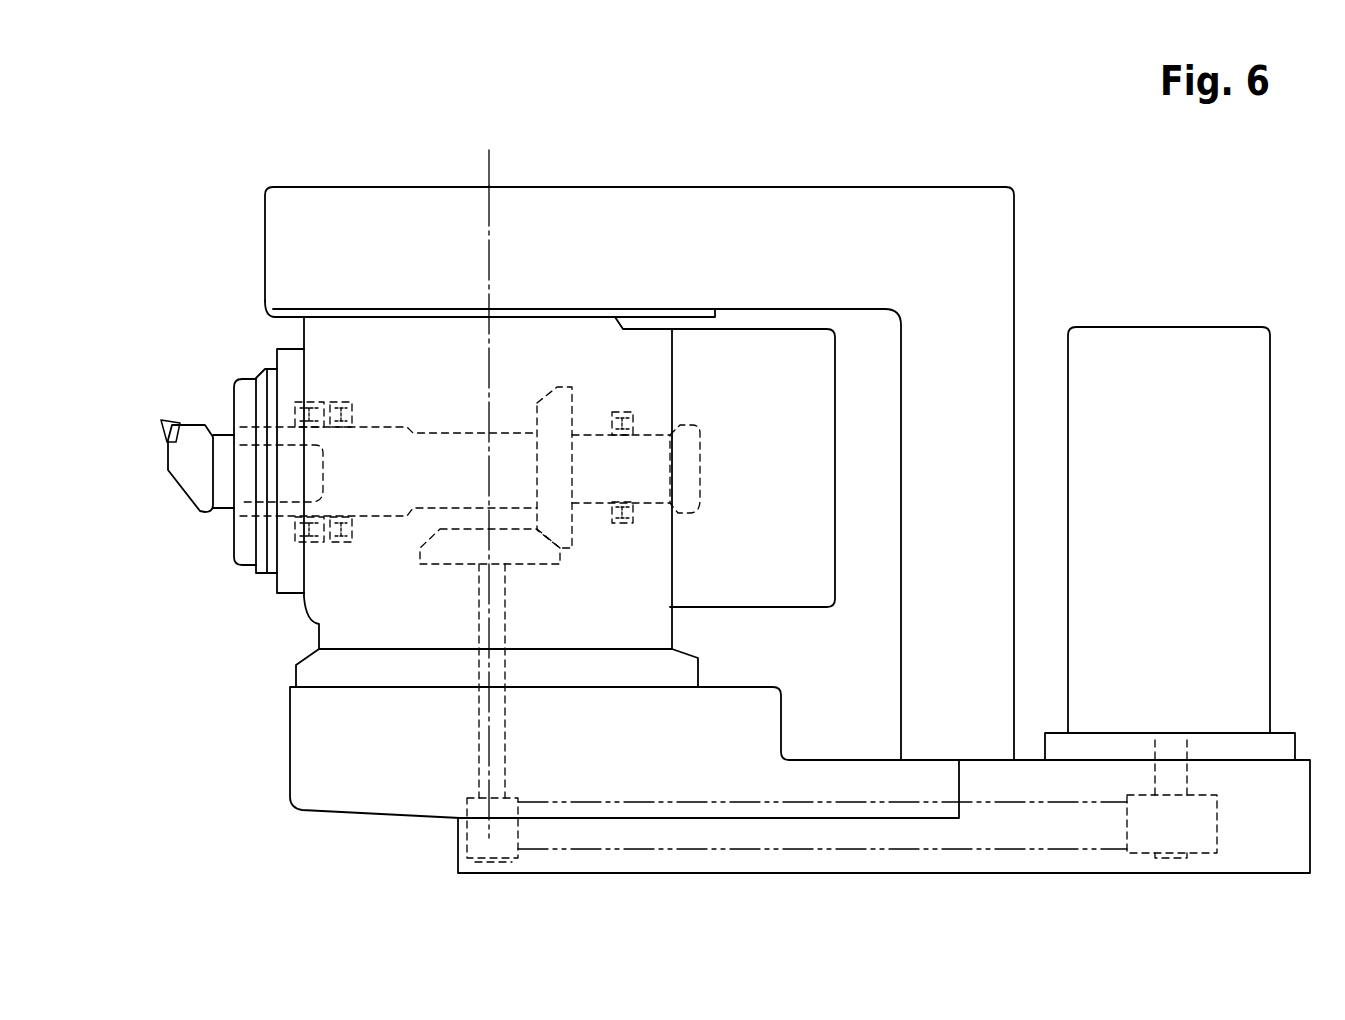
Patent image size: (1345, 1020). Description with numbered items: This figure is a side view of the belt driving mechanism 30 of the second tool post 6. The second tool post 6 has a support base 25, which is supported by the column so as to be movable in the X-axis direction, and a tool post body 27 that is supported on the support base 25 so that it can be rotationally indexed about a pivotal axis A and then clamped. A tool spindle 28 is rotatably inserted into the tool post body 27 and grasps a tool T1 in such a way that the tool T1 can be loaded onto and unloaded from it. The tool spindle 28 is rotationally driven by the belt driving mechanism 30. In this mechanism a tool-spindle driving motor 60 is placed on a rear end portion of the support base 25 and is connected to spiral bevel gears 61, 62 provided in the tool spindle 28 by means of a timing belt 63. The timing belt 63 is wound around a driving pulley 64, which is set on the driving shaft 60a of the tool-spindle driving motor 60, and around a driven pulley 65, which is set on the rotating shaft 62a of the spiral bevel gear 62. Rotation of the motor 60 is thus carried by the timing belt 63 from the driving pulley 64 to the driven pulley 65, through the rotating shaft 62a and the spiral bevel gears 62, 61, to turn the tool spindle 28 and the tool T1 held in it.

The second tool post 6 is at (218, 203).
The pivotal axis A is at (489, 173).
The tool T1 is at (190, 495).
The support base 25 is at (290, 748).
The tool post body 27 is at (298, 604).
The tool spindle 28 is at (238, 553).
The belt driving mechanism 30 is at (625, 399).
The tool-spindle driving motor 60 is at (1270, 537).
The driving shaft 60a is at (1190, 777).
The spiral bevel gear 61 is at (578, 532).
The spiral bevel gear 62 is at (540, 575).
The rotating shaft 62a is at (508, 715).
The timing belt 63 is at (933, 848).
The driving pulley 64 is at (1217, 827).
The driven pulley 65 is at (457, 840).